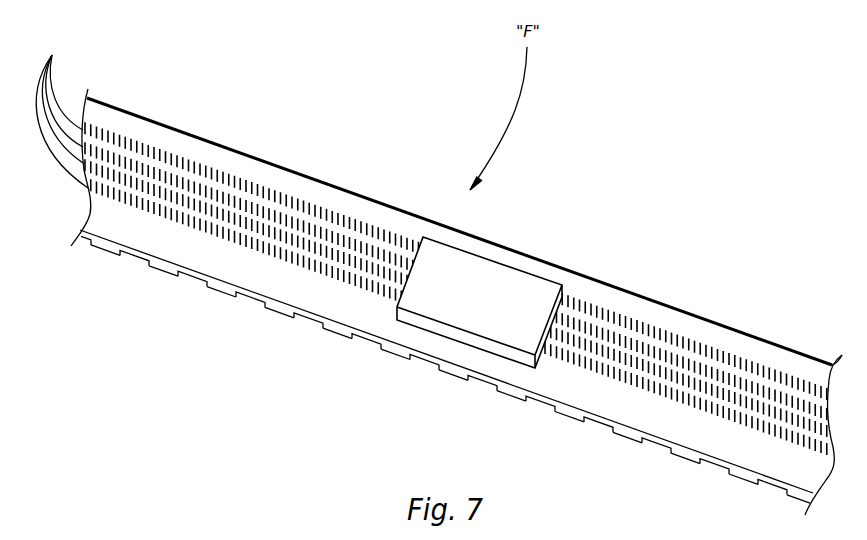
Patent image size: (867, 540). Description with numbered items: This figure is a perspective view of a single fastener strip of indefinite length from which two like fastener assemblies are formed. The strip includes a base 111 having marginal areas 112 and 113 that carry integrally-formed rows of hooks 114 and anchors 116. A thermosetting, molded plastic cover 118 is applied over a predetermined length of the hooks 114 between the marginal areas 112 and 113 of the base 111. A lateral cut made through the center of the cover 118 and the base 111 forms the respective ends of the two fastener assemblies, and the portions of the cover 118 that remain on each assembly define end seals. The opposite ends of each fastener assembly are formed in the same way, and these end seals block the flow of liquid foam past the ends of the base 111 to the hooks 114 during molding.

The base 111 is at (138, 257).
The marginal area 112 is at (282, 286).
The marginal area 113 is at (280, 175).
The hooks 114 is at (62, 109).
The anchors 116 is at (338, 328).
The cover 118 is at (490, 288).